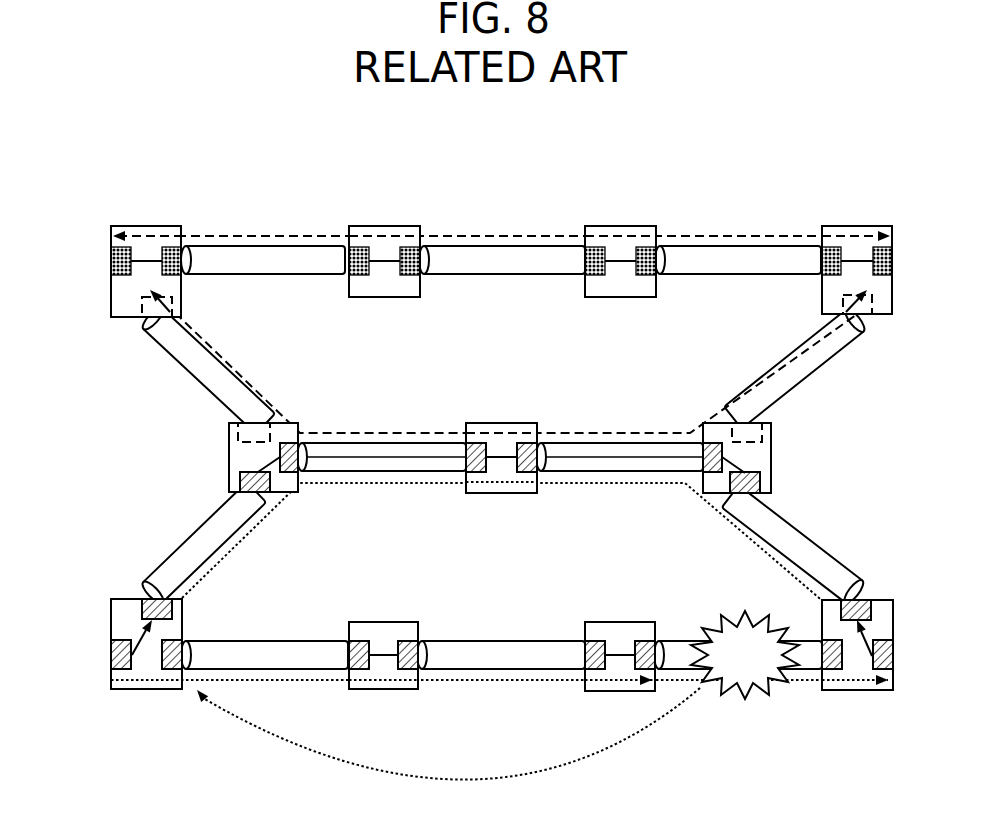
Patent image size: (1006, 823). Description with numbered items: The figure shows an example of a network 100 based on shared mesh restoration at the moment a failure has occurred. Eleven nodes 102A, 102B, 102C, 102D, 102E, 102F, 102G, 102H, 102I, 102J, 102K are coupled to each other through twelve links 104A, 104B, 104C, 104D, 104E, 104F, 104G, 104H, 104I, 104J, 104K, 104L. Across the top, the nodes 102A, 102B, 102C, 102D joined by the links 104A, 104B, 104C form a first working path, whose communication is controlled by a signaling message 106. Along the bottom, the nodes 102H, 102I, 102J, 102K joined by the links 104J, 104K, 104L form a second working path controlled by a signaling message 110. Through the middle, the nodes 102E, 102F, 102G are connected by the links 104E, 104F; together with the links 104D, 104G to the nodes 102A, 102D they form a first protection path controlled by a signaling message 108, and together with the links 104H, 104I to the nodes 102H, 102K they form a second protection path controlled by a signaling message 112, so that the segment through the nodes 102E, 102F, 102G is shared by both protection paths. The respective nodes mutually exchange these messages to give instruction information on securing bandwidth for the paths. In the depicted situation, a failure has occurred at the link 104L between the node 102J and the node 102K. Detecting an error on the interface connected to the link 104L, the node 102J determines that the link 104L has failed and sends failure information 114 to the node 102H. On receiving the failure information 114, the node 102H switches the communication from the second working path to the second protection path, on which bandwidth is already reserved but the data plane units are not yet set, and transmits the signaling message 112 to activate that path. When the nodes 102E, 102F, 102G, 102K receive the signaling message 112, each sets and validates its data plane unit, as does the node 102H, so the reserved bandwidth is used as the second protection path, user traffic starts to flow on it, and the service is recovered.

The network 100 is at (866, 158).
The node 102A is at (182, 228).
The node 102B is at (420, 228).
The node 102C is at (657, 228).
The node 102D is at (893, 228).
The node 102E is at (281, 418).
The node 102F is at (537, 424).
The node 102G is at (717, 418).
The node 102H is at (111, 676).
The node 102I is at (348, 687).
The node 102J is at (585, 685).
The node 102K is at (893, 606).
The link 104A is at (310, 253).
The link 104B is at (544, 253).
The link 104C is at (797, 253).
The link 104D is at (178, 353).
The link 104E is at (360, 450).
The link 104F is at (655, 450).
The link 104G is at (832, 353).
The link 104H is at (178, 562).
The link 104I is at (832, 562).
The link 104J is at (263, 647).
The link 104K is at (500, 648).
The link 104L is at (673, 648).
The signaling message 106 is at (749, 236).
The signaling message 108 is at (438, 433).
The signaling message 110 is at (462, 682).
The signaling message 112 is at (613, 483).
The failure information 114 is at (642, 745).